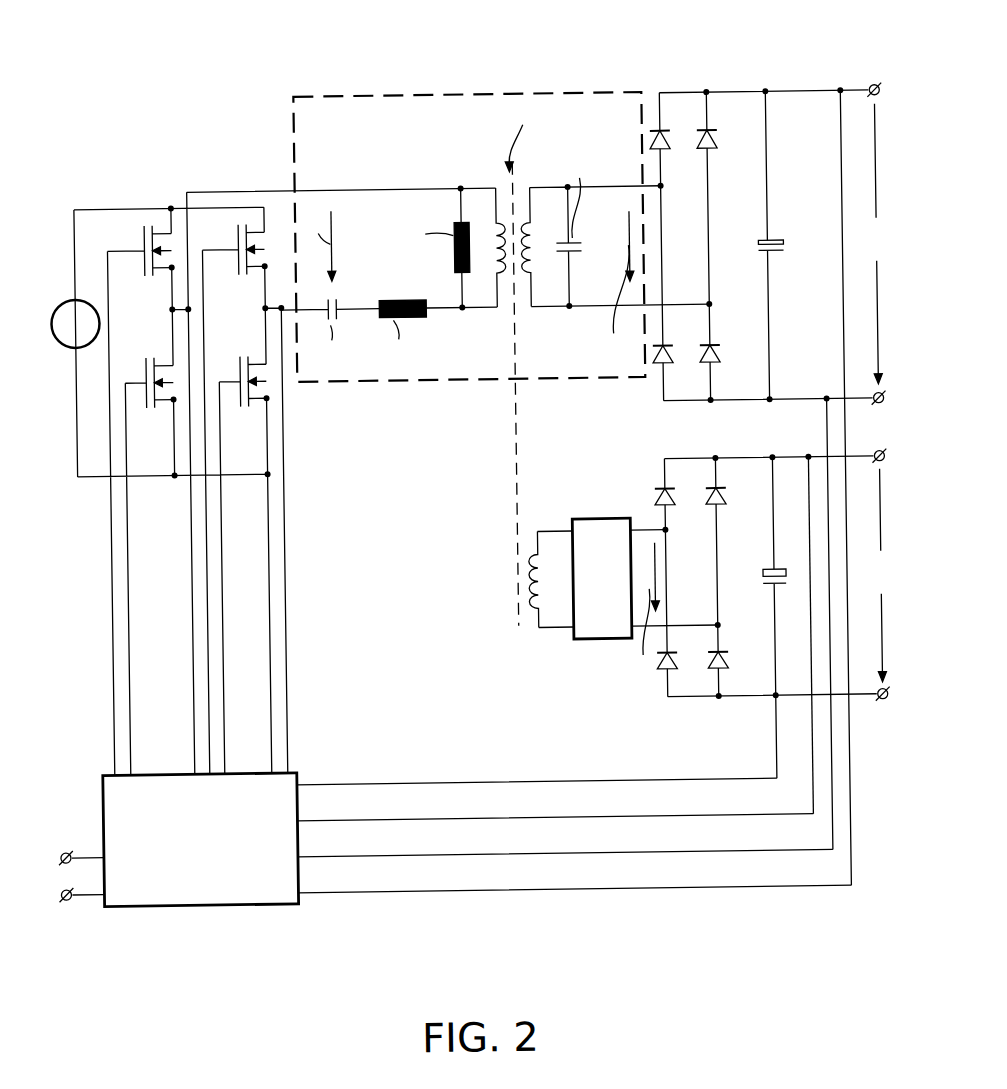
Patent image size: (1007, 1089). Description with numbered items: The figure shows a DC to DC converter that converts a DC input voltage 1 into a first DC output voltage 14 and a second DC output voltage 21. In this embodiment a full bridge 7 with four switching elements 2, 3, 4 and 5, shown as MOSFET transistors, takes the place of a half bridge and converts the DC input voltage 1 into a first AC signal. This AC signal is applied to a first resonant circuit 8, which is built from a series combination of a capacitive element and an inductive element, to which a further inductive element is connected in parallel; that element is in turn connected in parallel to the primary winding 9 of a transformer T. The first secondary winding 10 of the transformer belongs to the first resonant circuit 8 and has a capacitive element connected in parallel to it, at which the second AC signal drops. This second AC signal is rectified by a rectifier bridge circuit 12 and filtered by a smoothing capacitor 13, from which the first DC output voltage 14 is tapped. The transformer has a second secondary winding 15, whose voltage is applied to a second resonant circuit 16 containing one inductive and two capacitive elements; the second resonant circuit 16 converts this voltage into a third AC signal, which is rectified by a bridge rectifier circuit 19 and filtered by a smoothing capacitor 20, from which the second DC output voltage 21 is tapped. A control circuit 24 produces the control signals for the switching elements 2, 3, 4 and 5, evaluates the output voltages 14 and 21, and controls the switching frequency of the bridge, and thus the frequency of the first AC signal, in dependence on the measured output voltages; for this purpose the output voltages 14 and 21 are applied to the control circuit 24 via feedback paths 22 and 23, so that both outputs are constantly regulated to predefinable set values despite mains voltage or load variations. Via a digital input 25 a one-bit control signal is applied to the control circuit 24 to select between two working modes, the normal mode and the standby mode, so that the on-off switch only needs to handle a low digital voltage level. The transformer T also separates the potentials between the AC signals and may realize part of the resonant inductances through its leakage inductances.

The DC input voltage 1 is at (46, 339).
The switching element 2 is at (240, 357).
The switching element 3 is at (240, 233).
The switching element 4 is at (146, 357).
The switching element 5 is at (146, 232).
The full bridge 7 is at (180, 405).
The first resonant circuit 8 is at (448, 321).
The primary winding 9 is at (503, 215).
The first secondary winding 10 is at (524, 215).
The rectifier bridge circuit 12 is at (694, 91).
The smoothing capacitor 13 is at (789, 245).
The first DC output voltage 14 is at (878, 190).
The second secondary winding 15 is at (530, 607).
The second resonant circuit 16 is at (603, 518).
The bridge rectifier circuit 19 is at (687, 699).
The smoothing capacitor 20 is at (761, 581).
The second DC output voltage 21 is at (878, 536).
The feedback path 22 is at (372, 817).
The feedback path 23 is at (372, 889).
The control circuit 24 is at (226, 901).
The digital input 25 is at (79, 880).